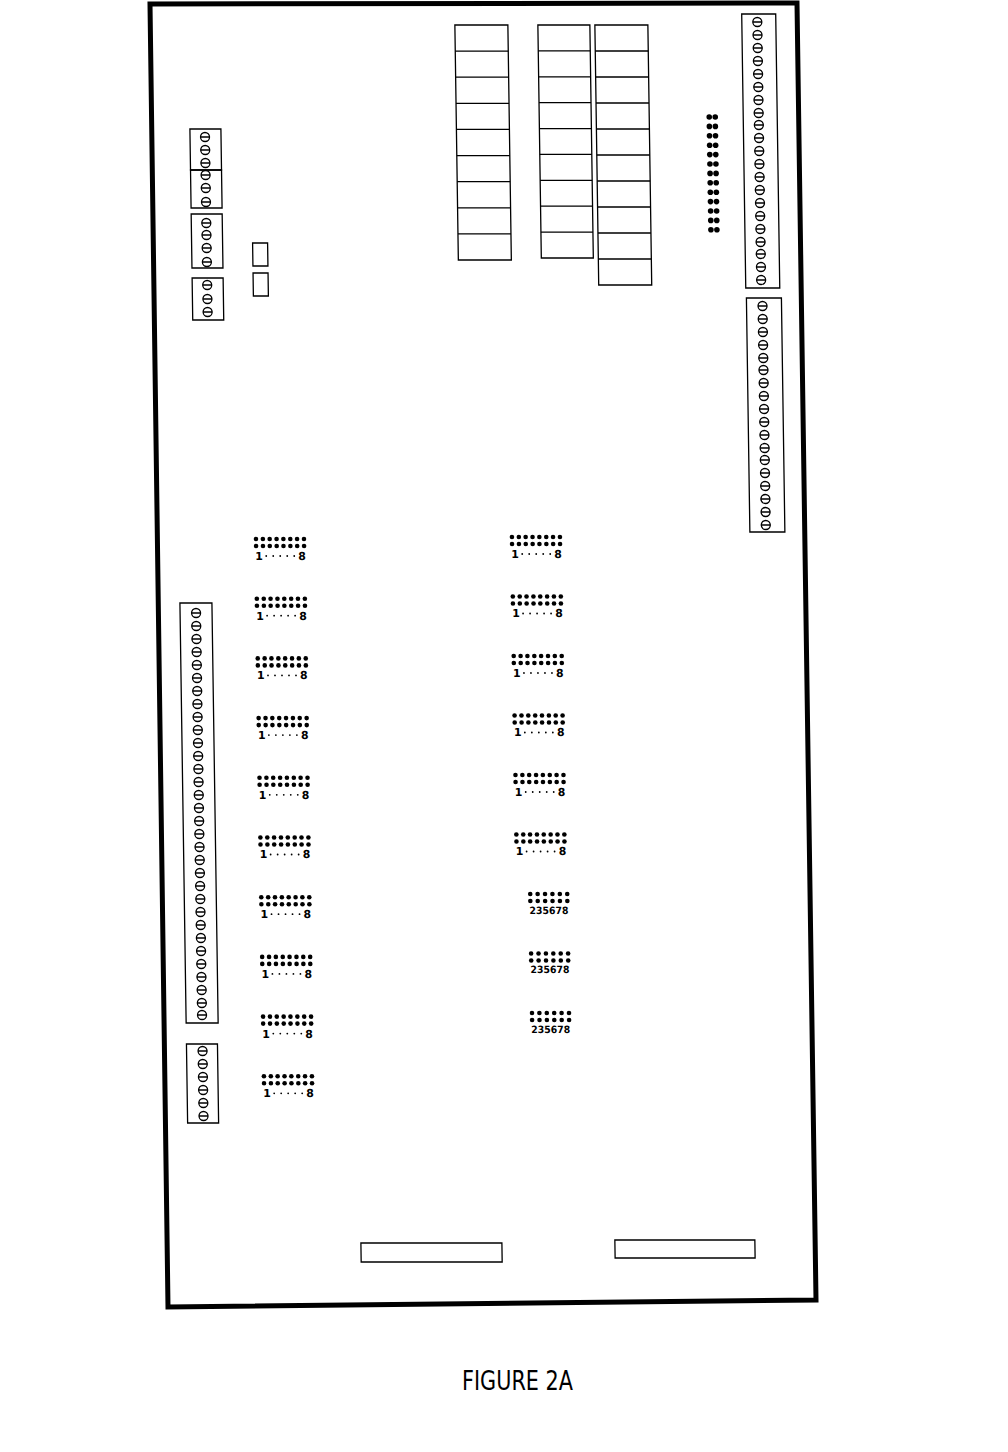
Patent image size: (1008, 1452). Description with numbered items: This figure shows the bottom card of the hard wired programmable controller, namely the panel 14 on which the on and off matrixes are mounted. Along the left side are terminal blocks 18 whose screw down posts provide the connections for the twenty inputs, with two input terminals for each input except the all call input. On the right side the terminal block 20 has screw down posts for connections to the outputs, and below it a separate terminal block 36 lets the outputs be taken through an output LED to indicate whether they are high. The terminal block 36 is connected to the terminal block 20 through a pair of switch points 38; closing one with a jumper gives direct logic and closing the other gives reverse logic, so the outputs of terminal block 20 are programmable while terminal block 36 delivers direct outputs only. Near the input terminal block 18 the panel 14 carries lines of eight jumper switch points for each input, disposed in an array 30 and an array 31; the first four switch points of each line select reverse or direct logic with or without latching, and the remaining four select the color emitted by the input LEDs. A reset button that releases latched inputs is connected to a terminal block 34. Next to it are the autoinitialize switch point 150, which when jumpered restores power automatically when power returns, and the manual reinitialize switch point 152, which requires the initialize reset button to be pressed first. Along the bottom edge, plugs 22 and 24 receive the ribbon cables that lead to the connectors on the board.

The panel 14 is at (816, 1209).
The terminal block 18 is at (163, 833).
The terminal block 20 is at (778, 146).
The plug 22 is at (417, 1243).
The plug 24 is at (667, 1240).
The array 30 is at (273, 1113).
The array 31 is at (532, 1060).
The terminal block 34 is at (179, 217).
The terminal block 36 is at (739, 394).
The switch points 38 is at (707, 107).
The autoinitialize switch point 150 is at (264, 253).
The manual reinitialize switch point 152 is at (264, 284).